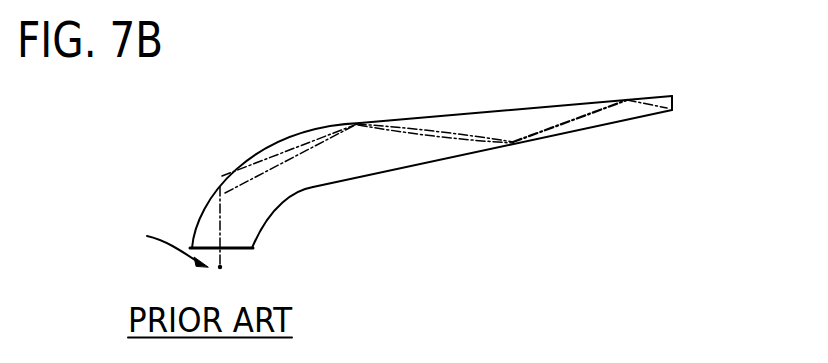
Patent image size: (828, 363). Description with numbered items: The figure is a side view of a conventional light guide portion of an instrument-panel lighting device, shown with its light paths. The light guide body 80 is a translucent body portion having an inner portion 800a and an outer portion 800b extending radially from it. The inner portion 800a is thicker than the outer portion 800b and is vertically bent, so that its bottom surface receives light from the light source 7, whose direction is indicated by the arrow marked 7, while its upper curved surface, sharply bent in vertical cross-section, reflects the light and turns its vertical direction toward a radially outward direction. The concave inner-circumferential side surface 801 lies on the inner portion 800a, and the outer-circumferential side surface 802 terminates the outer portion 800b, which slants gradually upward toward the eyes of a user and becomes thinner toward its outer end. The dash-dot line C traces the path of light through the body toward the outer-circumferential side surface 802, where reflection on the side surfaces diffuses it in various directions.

The prior art fan blade 80 is at (452, 164).
The inner-circumferential side surface 801 is at (191, 247).
The inner portion 800a is at (233, 215).
The outer portion 800b is at (397, 164).
The outer-circumferential side surface 802 is at (675, 103).
The blade chord / camber line C is at (288, 150).
The light source 7 is at (167, 245).